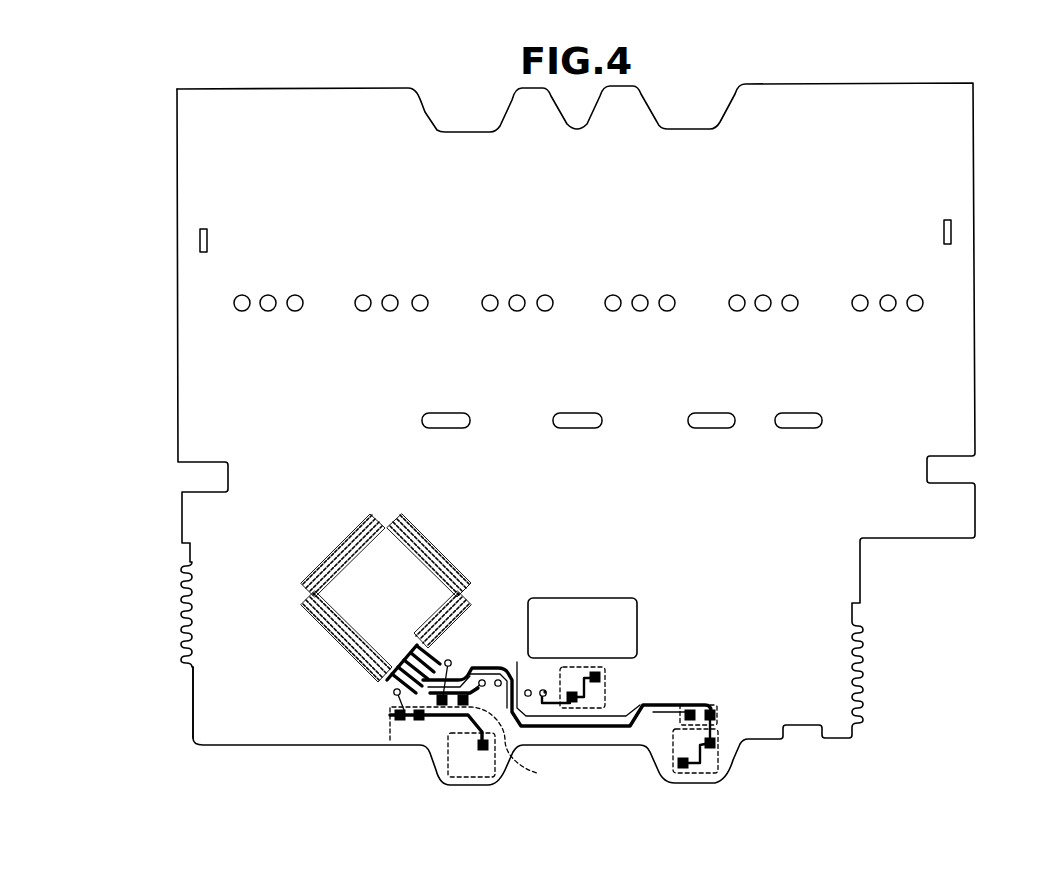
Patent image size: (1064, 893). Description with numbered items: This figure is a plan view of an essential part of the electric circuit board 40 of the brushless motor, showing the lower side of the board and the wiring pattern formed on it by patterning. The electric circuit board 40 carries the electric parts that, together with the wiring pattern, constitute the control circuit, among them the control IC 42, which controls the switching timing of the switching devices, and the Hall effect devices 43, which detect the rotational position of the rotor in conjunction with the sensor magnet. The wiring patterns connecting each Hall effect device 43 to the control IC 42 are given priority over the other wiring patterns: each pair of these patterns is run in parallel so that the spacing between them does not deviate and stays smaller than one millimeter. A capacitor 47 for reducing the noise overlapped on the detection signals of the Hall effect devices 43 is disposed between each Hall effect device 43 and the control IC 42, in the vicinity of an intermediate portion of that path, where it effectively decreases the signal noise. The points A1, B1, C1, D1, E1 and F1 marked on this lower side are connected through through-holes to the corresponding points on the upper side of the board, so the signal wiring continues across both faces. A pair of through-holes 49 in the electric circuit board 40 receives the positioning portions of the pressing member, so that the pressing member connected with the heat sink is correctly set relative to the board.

The electric circuit board 40 is at (948, 402).
The control IC 42 is at (367, 637).
The Hall effect devices 43 is at (608, 693).
The capacitor 47 is at (390, 742).
The through-holes 49 is at (200, 243).
The point A1 is at (395, 696).
The point B1 is at (451, 660).
The point C1 is at (498, 680).
The point D1 is at (528, 690).
The point E1 is at (543, 690).
The point F1 is at (545, 690).